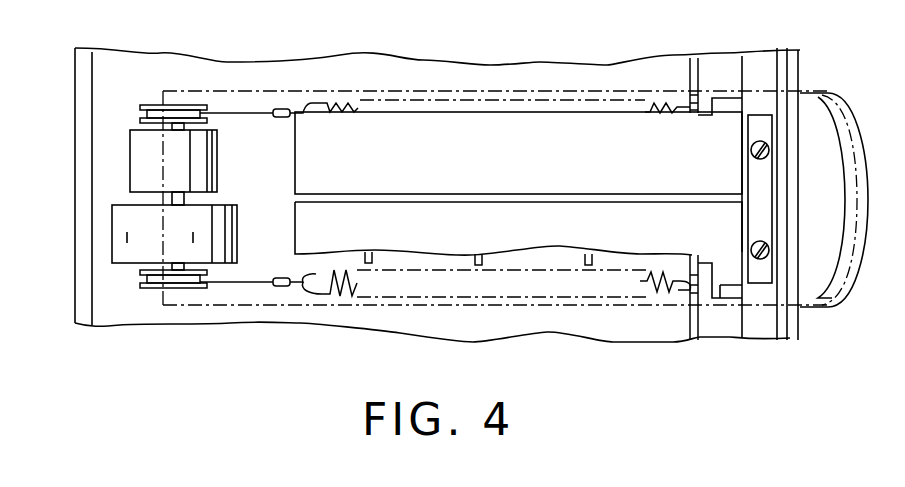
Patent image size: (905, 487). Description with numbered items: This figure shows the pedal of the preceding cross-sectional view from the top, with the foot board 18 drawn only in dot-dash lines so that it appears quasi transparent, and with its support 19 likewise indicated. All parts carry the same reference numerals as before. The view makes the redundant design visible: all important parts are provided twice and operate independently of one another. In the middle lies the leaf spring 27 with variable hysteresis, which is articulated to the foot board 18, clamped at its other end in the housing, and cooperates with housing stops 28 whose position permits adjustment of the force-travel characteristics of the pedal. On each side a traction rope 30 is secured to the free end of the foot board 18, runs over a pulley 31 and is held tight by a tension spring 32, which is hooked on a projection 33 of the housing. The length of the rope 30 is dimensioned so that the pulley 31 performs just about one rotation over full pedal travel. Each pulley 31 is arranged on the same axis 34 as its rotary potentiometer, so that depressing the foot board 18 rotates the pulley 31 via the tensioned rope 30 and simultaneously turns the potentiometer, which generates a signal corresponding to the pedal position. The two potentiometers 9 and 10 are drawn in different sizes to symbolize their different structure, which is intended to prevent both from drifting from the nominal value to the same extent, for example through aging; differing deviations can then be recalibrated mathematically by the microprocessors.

The potentiometer 9 is at (137, 255).
The potentiometer 10 is at (142, 147).
The foot board 18 is at (647, 92).
The support 19 is at (810, 127).
The leaf spring 27 is at (565, 127).
The housing stops 28 is at (482, 268).
The traction rope 30 is at (242, 112).
The pulley 31 is at (152, 105).
The tension spring 32 is at (495, 100).
The projection 33 is at (680, 290).
The axis 34 is at (168, 118).